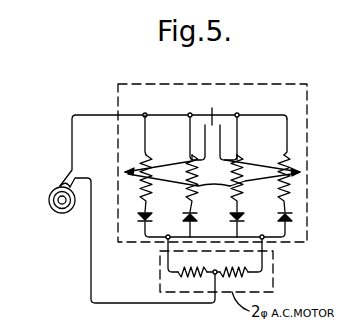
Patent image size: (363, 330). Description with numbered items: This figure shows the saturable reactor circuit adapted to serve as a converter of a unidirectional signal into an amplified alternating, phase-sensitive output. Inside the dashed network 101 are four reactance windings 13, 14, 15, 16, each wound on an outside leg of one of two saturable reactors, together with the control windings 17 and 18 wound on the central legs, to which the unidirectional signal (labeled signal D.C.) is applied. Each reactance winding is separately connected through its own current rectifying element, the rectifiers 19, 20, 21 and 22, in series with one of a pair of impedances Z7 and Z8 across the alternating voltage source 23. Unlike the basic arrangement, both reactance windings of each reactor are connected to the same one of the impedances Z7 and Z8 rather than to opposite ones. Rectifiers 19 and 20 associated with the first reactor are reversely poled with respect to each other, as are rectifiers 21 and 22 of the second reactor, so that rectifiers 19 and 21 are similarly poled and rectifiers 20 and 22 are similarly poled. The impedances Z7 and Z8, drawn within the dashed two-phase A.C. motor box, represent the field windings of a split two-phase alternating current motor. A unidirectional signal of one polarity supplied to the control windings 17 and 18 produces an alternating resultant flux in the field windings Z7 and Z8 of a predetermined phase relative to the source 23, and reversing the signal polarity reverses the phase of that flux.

The reactance winding 13 is at (148, 154).
The reactance winding 14 is at (189, 156).
The reactance winding 15 is at (237, 155).
The reactance winding 16 is at (281, 156).
The control winding 17 is at (177, 180).
The control winding 18 is at (262, 180).
The current rectifying element 19 is at (142, 220).
The current rectifying element 20 is at (194, 218).
The current rectifying element 21 is at (236, 218).
The current rectifying element 22 is at (285, 218).
The alternating voltage source 23 is at (49, 199).
The signal network 101 is at (307, 105).
The impedance Z7 is at (192, 267).
The impedance Z8 is at (234, 267).